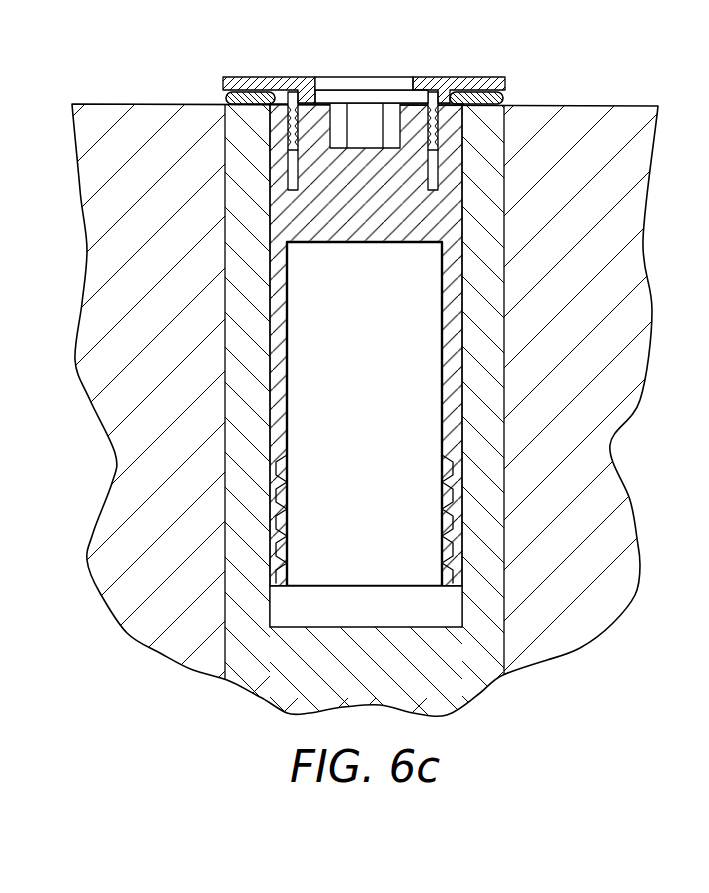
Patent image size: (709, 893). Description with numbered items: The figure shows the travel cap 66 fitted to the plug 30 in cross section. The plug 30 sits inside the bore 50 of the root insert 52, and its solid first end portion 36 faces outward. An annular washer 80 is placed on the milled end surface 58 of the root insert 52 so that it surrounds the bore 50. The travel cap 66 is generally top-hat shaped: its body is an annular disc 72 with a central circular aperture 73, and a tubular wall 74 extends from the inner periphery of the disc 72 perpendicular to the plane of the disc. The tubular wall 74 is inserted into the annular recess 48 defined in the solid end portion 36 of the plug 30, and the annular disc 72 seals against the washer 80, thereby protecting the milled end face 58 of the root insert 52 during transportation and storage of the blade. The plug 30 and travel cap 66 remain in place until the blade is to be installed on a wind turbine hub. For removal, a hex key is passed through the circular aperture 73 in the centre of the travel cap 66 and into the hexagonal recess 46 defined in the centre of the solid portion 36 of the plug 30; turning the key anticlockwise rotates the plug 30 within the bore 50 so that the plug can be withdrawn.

The plug 30 is at (266, 222).
The solid end portion 36 is at (438, 232).
The hexagonal recess 46 is at (358, 116).
The annular recess 48 is at (438, 185).
The bore 50 is at (298, 607).
The root insert 52 is at (474, 400).
The end surface 58 is at (228, 115).
The travel cap 66 is at (256, 78).
The annular disc 72 is at (465, 79).
The circular aperture 73 is at (394, 79).
The tubular wall 74 is at (290, 89).
The annular washer 80 is at (503, 98).